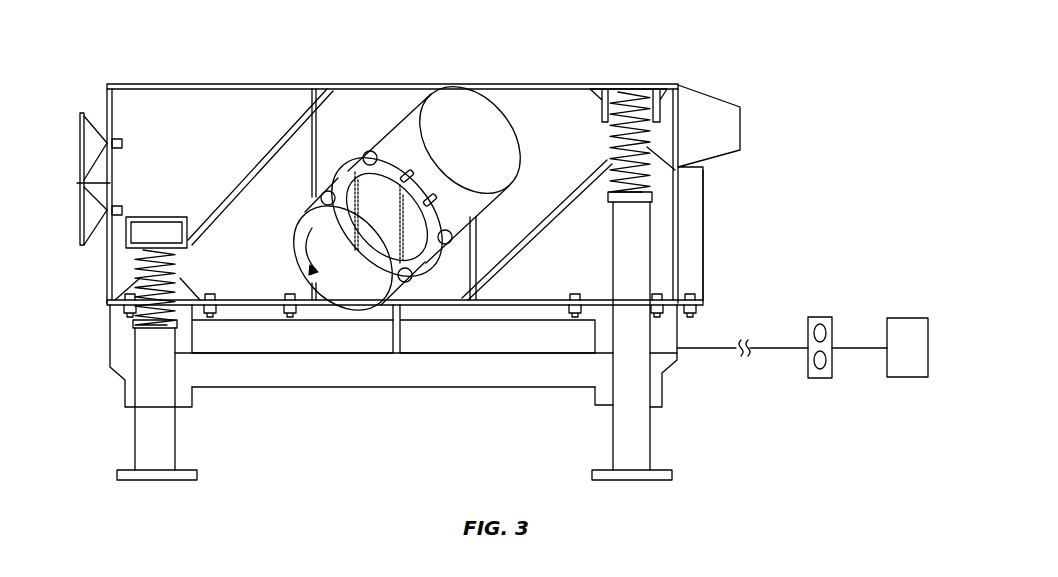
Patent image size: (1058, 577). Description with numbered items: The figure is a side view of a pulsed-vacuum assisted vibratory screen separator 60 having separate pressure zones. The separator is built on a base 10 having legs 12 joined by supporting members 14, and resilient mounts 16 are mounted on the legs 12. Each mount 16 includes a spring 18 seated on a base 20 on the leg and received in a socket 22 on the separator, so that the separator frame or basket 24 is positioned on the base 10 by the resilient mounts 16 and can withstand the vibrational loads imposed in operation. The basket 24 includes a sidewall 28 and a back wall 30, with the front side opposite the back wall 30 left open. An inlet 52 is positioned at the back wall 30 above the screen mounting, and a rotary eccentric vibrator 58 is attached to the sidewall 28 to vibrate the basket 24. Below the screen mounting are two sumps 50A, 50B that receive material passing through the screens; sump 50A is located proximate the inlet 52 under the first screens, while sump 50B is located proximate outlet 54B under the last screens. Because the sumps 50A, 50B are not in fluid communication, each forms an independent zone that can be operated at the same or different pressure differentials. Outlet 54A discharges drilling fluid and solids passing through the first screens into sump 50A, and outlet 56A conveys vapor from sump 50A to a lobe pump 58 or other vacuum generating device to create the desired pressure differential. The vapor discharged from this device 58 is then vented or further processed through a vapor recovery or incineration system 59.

The base 10 is at (132, 432).
The legs 12 is at (176, 446).
The supporting members 14 is at (398, 388).
The resilient mounts 16 is at (128, 255).
The spring 18 is at (177, 265).
The base of mount 20 is at (128, 327).
The socket 22 is at (190, 243).
The separator frame or basket 24 is at (105, 104).
The sidewall 28 is at (405, 84).
The back wall 30 is at (683, 184).
The sump 50A is at (522, 322).
The sump 50B is at (248, 325).
The inlet 52 is at (710, 93).
The outlet 54A is at (668, 390).
The outlet 54B is at (126, 395).
The outlet 56A is at (708, 348).
The lobe pump 58 is at (388, 132).
The vapor recovery or incineration system 59 is at (905, 318).
The separator 60 is at (190, 40).